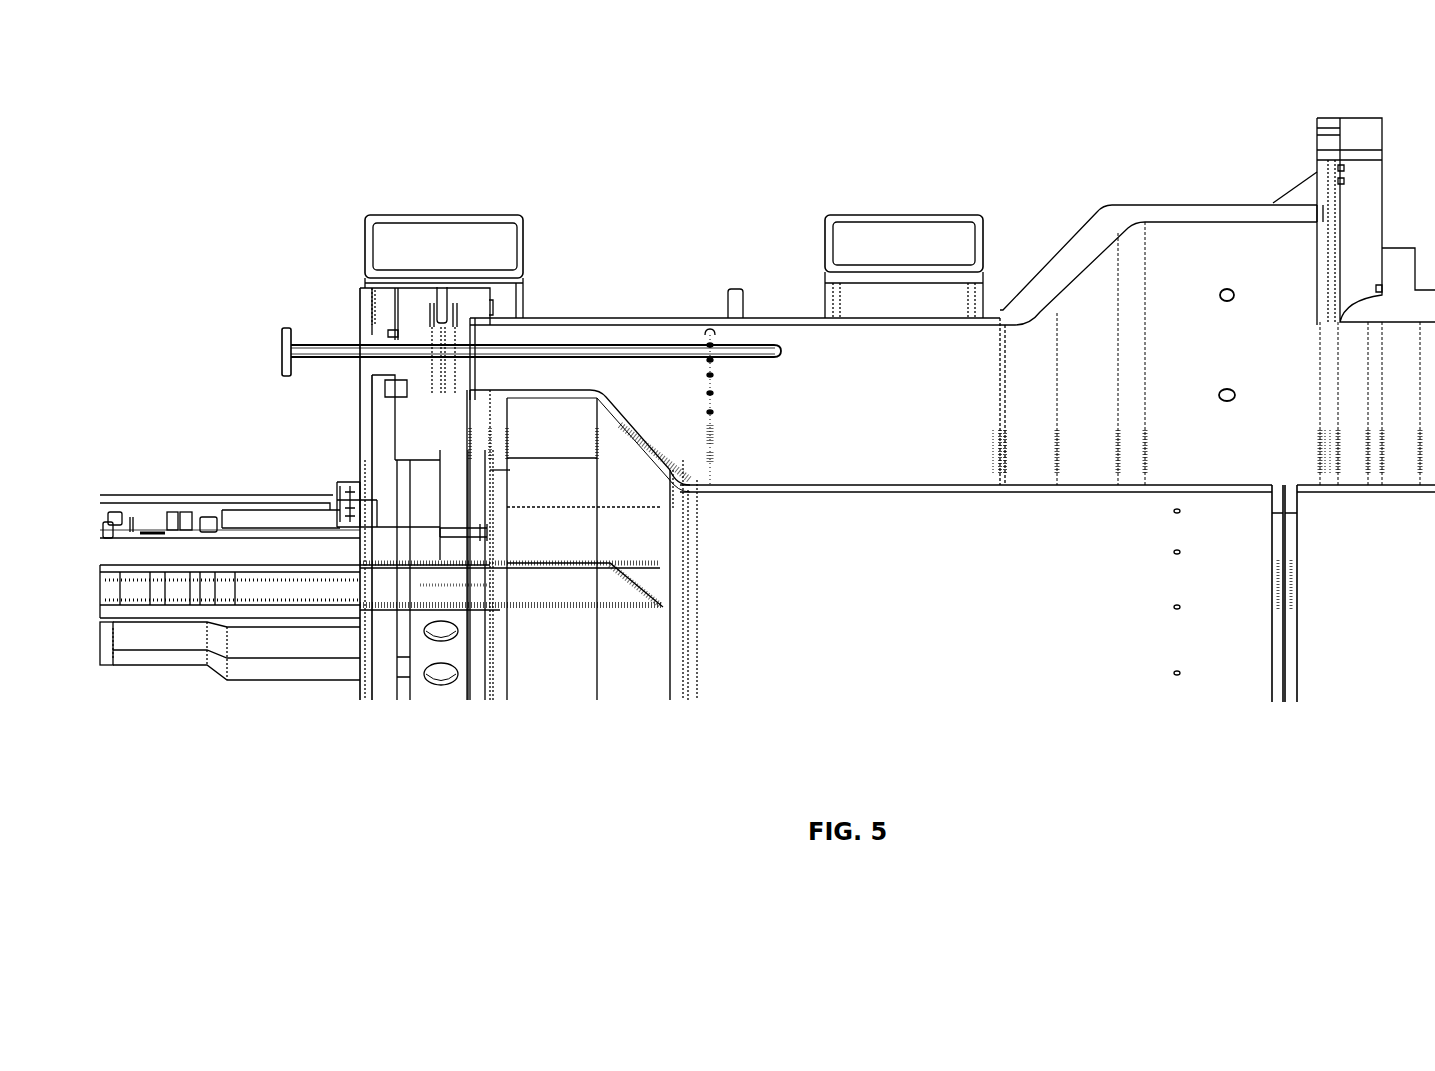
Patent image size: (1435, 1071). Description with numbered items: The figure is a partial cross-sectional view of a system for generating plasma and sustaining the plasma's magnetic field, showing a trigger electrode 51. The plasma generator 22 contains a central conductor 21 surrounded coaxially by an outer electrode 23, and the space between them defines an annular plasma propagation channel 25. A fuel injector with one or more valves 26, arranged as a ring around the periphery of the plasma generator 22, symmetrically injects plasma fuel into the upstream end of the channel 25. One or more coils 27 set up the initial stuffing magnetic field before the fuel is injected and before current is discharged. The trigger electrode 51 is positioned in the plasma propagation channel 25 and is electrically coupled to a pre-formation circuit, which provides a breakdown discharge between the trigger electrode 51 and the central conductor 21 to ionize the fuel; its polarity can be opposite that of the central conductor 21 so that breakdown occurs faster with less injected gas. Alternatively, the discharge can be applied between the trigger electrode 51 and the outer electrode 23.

The central conductor 21 is at (805, 530).
The plasma generator 22 is at (381, 494).
The outer electrode 23 is at (547, 312).
The plasma propagation channel 25 is at (962, 370).
The valves 26 is at (710, 330).
The coils 27 is at (900, 232).
The trigger electrode 51 is at (605, 340).